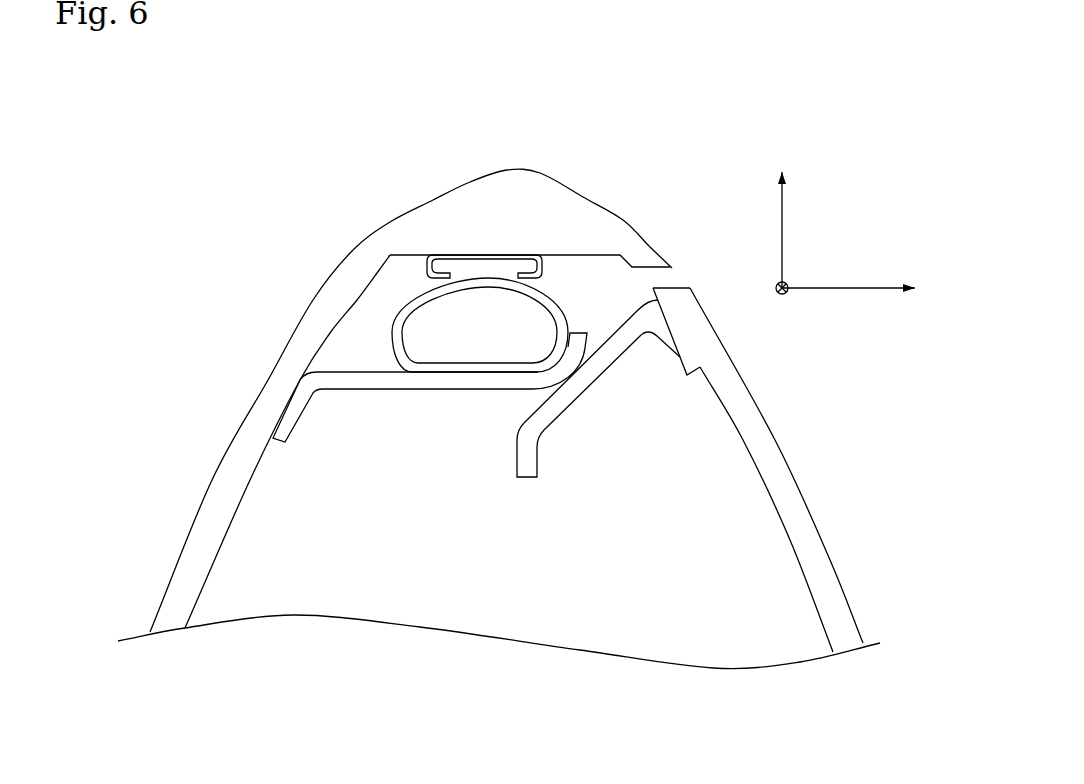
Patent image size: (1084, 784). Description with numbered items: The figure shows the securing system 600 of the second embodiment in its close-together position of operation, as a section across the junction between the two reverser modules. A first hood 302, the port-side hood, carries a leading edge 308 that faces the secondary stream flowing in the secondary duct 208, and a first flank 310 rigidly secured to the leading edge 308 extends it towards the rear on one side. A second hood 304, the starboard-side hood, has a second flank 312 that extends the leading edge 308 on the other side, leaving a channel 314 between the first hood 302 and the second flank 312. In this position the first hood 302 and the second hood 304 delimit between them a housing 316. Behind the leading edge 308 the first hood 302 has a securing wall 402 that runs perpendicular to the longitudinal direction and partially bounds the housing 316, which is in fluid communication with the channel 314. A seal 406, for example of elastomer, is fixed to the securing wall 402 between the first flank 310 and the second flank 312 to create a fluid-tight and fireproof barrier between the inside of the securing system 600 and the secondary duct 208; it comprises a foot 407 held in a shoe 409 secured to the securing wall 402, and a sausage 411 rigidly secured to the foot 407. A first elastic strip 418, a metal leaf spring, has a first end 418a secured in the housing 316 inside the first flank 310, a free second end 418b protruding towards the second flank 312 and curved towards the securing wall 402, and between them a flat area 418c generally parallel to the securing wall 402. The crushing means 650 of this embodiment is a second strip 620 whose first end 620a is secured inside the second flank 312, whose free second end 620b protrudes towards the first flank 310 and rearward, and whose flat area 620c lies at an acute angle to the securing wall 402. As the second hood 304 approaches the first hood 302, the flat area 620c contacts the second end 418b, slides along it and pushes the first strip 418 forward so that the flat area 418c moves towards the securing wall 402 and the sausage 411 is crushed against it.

The securing system 600 is at (196, 198).
The leading edge 308 is at (510, 169).
The first hood 302 is at (182, 332).
The first flank 310 is at (187, 587).
The securing wall 402 is at (557, 258).
The shoe 409 is at (432, 253).
The foot 407 is at (440, 267).
The sausage 411 is at (393, 325).
The housing 316 is at (337, 366).
The first elastic strip 418 is at (364, 328).
The first end of first strip 418a is at (292, 443).
The second end of first strip 418b is at (583, 333).
The flat area of first strip 418c is at (343, 380).
The channel 314 is at (662, 277).
The second strip 620 is at (678, 461).
The first end of second strip 620a is at (687, 357).
The second end of second strip 620b is at (538, 478).
The flat area of second strip 620c is at (605, 353).
The second hood 304 is at (820, 447).
The second flank 312 is at (812, 535).
The seal 406 is at (455, 455).
The crushing means 650 is at (723, 528).
The secondary duct 208 is at (850, 198).